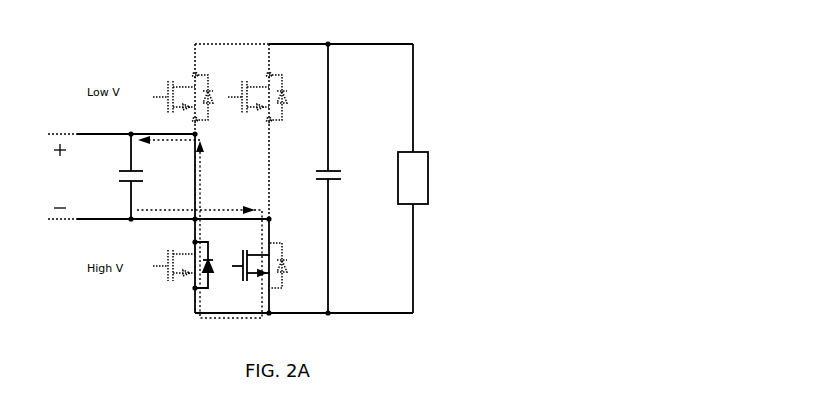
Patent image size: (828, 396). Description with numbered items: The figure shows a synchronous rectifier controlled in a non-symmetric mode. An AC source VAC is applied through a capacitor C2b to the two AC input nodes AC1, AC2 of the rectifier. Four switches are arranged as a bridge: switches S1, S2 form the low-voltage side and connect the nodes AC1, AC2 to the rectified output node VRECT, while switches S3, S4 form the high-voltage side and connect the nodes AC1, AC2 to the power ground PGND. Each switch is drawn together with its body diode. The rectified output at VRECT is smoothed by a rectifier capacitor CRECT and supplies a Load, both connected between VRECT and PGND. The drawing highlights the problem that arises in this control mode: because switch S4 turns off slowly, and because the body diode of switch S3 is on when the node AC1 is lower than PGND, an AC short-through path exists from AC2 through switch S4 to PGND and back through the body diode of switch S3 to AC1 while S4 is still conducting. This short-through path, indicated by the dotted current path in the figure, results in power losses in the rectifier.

The switch S1 is at (183, 90).
The switch S2 is at (257, 90).
The switch S3 is at (183, 275).
The switch S4 is at (259, 275).
The capacitor C2b is at (142, 176).
The rectifier capacitor CRECT is at (349, 178).
The load Load is at (429, 178).
The AC voltage source VAC is at (56, 176).
The AC input node AC1 is at (136, 124).
The AC input node AC2 is at (173, 231).
The rectified output node VRECT is at (365, 45).
The power ground PGND is at (326, 314).